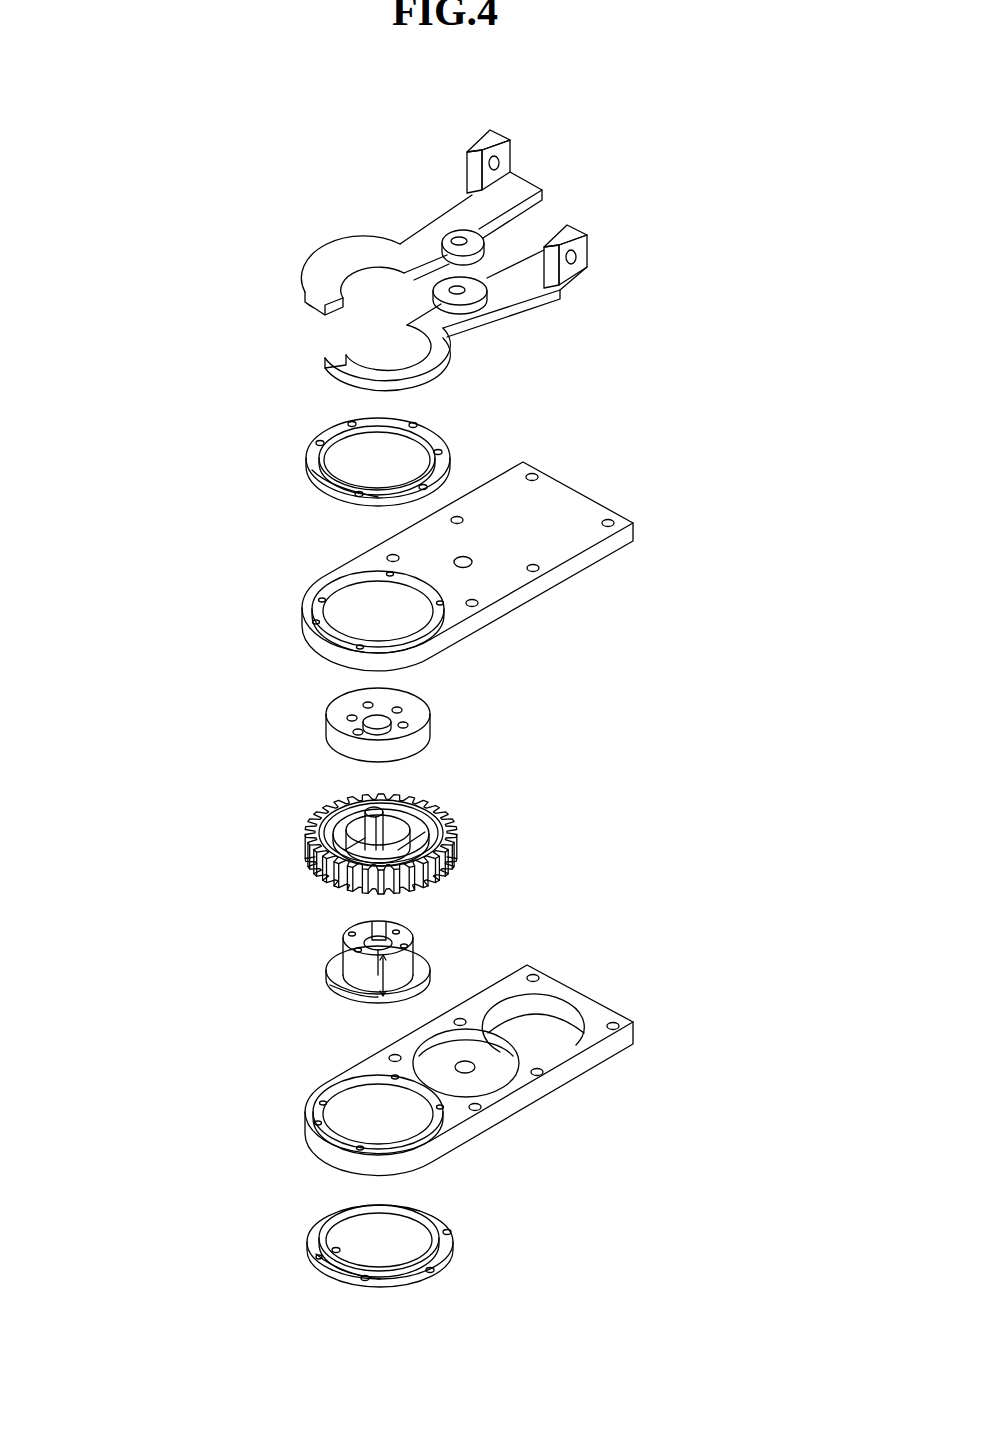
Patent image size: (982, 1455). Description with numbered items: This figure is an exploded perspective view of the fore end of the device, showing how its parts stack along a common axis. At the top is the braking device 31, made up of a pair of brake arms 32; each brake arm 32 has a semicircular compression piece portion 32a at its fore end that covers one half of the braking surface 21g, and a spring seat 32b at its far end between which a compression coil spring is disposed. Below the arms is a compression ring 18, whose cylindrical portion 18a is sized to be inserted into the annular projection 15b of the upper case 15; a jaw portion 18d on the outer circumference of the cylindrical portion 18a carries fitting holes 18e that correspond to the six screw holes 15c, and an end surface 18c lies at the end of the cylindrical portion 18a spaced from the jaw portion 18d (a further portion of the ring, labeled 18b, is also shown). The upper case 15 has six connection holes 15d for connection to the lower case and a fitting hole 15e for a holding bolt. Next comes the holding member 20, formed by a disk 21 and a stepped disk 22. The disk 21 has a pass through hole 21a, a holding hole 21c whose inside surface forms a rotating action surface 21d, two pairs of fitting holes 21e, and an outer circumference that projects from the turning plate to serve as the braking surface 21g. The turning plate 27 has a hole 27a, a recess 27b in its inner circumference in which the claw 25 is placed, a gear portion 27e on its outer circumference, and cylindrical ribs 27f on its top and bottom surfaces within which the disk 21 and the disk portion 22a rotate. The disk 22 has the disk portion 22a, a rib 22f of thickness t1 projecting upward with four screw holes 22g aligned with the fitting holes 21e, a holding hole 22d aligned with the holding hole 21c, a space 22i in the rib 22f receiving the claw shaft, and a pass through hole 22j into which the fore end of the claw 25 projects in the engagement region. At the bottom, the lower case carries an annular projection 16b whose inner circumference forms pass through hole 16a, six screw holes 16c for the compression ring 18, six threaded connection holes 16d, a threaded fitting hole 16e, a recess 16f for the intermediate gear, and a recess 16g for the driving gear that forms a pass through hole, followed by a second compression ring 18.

The braking device 31 is at (735, 104).
The brake arm 32 is at (545, 172).
The semicircular compression piece portion 32a is at (325, 268).
The spring seat 32b is at (488, 148).
The compression ring 18 is at (317, 445).
The cylindrical portion 18a is at (348, 420).
The raised inner rim of ring 18b is at (405, 433).
The end surface 18c is at (323, 1233).
The jaw portion 18d is at (323, 1257).
The fitting holes 18e is at (313, 468).
The upper case 15 is at (658, 485).
The annular projection 15b is at (317, 603).
The screw holes 15c is at (313, 623).
The connection holes 15d is at (538, 472).
The fitting hole 15e is at (468, 555).
The holding member 20 is at (127, 763).
The disk 21 is at (293, 740).
The pass through hole 21a is at (365, 728).
The holding hole 21c is at (370, 705).
The rotating action surface 21d is at (398, 710).
The fitting holes 21e is at (352, 718).
The braking surface 21g is at (392, 723).
The turning plate 27 is at (457, 873).
The hole 27a is at (320, 866).
The recess 27b is at (400, 805).
The gear portion 27e is at (318, 832).
The cylindrical ribs 27f is at (445, 842).
The claw 25 is at (390, 835).
The disk with stepped portion 22 is at (290, 962).
The disk portion 22a is at (333, 972).
The holding hole 22d is at (366, 928).
The rib 22f is at (357, 977).
The screw holes 22g is at (350, 938).
The space 22i is at (381, 930).
The pass through hole 22j is at (388, 940).
The thickness of rib t1 is at (418, 985).
The pass through hole 16a is at (302, 1100).
The annular projection 16b is at (302, 1118).
The screw holes 16c is at (323, 1083).
The connection holes 16d is at (535, 977).
The fitting hole 16e is at (463, 1073).
The recess 16f is at (422, 1055).
The recess 16g is at (553, 1018).